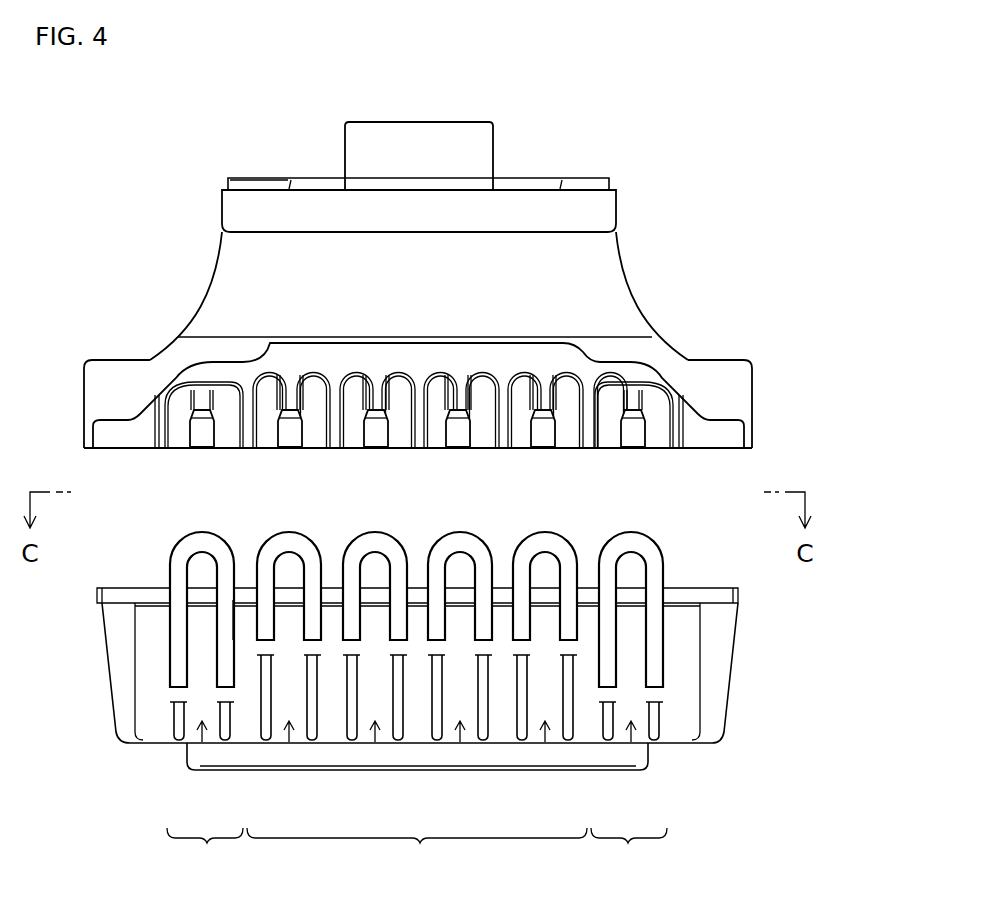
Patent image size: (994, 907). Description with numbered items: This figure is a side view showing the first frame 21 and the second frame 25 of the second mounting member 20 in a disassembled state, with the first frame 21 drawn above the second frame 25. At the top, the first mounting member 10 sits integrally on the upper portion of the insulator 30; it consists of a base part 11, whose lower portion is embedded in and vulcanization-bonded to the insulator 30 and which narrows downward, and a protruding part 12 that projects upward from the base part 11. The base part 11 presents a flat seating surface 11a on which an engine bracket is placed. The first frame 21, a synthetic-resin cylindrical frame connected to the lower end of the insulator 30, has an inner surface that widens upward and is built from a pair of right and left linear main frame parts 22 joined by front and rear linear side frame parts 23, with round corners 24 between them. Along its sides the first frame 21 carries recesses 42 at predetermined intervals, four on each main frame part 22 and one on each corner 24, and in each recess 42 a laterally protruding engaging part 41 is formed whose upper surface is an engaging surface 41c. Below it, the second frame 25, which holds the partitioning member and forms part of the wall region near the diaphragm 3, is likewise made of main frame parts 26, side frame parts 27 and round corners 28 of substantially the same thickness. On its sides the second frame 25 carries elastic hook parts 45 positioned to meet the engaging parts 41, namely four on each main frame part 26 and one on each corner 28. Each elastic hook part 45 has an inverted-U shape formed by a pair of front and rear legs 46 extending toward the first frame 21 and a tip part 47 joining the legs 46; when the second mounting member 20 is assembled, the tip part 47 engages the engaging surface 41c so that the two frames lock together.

The diaphragm 3 is at (650, 768).
The first mounting member 10 is at (540, 161).
The base part 11 is at (588, 183).
The seating surface 11a is at (292, 178).
The protruding part 12 is at (410, 128).
The second mounting member 20 is at (457, 514).
The first frame 21 is at (735, 375).
The main frame part 22 is at (463, 360).
The side frame part 23 is at (118, 380).
The corner 24 is at (209, 345).
The second frame 25 is at (728, 742).
The main frame part 26 is at (417, 854).
The side frame part 27 is at (97, 595).
The corner 28 is at (417, 854).
The insulator 30 is at (641, 266).
The engaging part 41 is at (200, 432).
The engaging surface 41c is at (213, 403).
The recess 42 is at (222, 398).
The elastic hook part 45 is at (202, 742).
The leg 46 is at (223, 630).
The tip part 47 is at (280, 530).